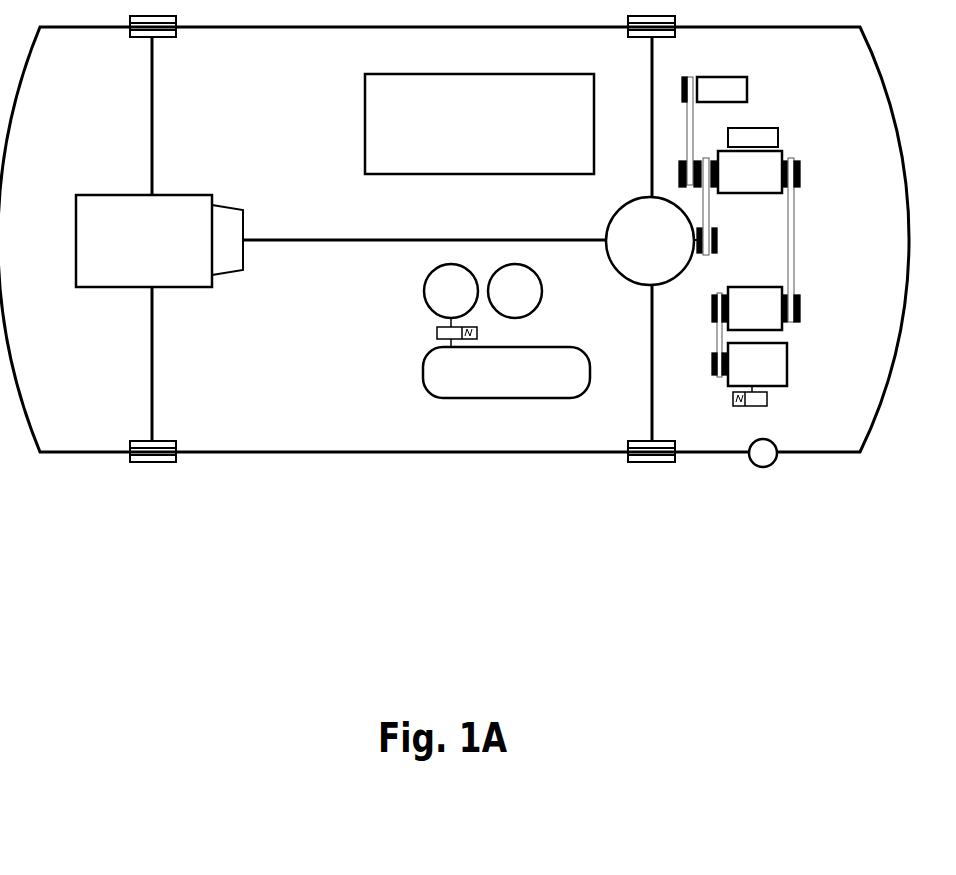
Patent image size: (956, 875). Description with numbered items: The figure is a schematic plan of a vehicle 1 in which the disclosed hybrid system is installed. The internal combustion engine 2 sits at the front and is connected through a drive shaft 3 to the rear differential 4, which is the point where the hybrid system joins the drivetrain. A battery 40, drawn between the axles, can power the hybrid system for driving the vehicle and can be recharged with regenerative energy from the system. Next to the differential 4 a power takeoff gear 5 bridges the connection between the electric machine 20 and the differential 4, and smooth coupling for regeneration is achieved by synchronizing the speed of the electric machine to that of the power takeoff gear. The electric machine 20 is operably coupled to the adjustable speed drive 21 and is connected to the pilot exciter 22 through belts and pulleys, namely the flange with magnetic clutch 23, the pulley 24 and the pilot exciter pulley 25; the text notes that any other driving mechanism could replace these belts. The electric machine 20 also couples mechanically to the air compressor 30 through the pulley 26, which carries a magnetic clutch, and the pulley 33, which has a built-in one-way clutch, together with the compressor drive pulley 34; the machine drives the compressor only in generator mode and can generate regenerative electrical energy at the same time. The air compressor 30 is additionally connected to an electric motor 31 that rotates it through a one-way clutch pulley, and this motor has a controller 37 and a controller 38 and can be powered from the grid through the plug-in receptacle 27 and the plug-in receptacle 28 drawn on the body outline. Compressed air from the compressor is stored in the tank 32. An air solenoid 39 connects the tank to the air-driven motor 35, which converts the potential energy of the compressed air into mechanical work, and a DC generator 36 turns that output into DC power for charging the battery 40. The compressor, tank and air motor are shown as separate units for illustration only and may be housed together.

The vehicle 1 is at (227, 453).
The internal combustion engine 2 is at (213, 194).
The drive shaft 3 is at (291, 239).
The differential 4 is at (611, 226).
The power takeoff gear 5 is at (719, 238).
The electric machine 20 is at (786, 150).
The adjustable speed drive 21 is at (777, 123).
The pilot exciter 22 is at (749, 90).
The flange with magnetic clutch 23 is at (706, 157).
The pulley 24 is at (682, 160).
The pilot exciter pulley 25 is at (691, 75).
The pulley 26 is at (801, 172).
The AC plug-in receptacle 27 is at (765, 477).
The plug-in receptacle 28 is at (751, 461).
The air compressor 30 is at (749, 285).
The electric motor 31 is at (790, 363).
The tank 32 is at (421, 375).
The pulley 33 is at (801, 305).
The compressor drive pulley 34 is at (711, 307).
The air-driven motor 35 is at (423, 292).
The DC generator 36 is at (543, 292).
The controller 37 is at (791, 396).
The controller 38 is at (769, 398).
The air solenoid 39 is at (435, 334).
The battery 40 is at (405, 71).